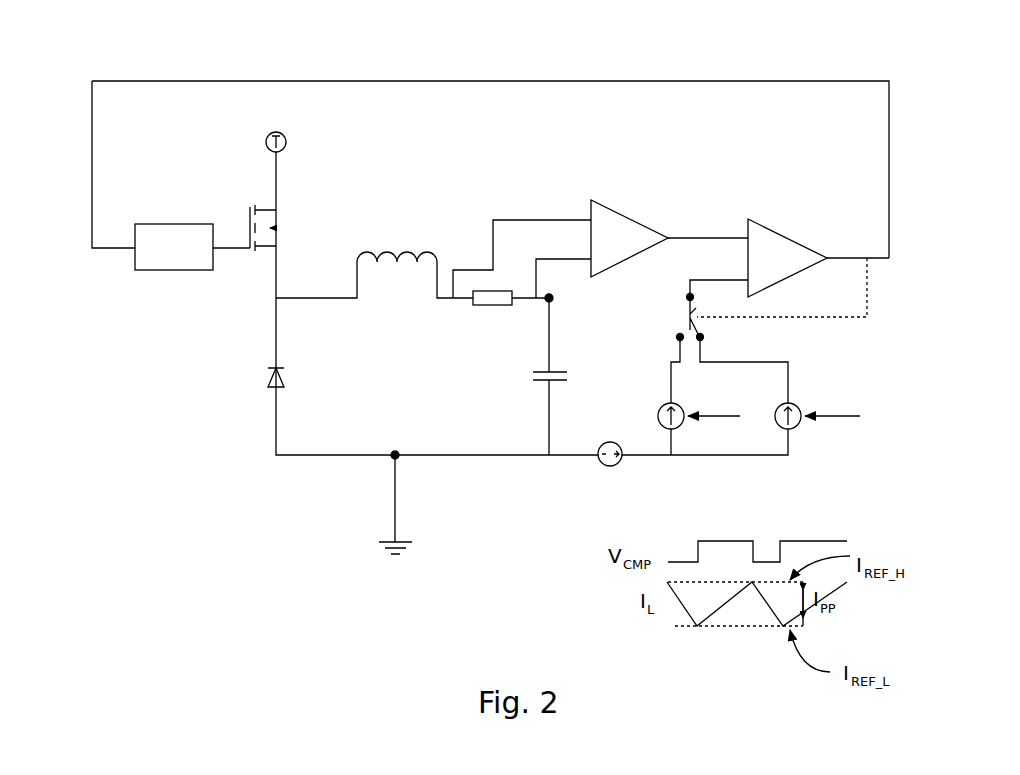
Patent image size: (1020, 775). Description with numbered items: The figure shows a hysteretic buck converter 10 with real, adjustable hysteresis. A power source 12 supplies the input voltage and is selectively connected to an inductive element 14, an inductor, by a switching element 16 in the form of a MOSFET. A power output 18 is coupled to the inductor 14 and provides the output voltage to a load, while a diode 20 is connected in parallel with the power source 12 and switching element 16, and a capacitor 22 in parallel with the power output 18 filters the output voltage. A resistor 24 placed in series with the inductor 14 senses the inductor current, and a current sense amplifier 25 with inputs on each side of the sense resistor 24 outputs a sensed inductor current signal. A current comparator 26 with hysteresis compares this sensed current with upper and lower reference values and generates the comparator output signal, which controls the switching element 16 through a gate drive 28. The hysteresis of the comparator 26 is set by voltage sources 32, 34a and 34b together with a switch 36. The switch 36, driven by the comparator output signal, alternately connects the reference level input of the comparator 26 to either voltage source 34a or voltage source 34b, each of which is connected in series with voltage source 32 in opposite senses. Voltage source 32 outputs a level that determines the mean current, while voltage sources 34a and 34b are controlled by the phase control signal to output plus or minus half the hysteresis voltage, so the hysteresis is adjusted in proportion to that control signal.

The hysteretic buck converter 10 is at (157, 535).
The power source 12 is at (258, 140).
The inductive element 14 is at (387, 248).
The switching element 16 is at (290, 227).
The power output 18 is at (557, 307).
The diode 20 is at (248, 395).
The capacitor 22 is at (523, 382).
The resistor 24 is at (483, 310).
The current sense amplifier 25 is at (637, 208).
The current comparator 26 is at (798, 230).
The gate drive 28 is at (175, 283).
The voltage source 32 is at (597, 463).
The voltage source 34a is at (660, 432).
The voltage source 34b is at (797, 430).
The switch 36 is at (718, 330).